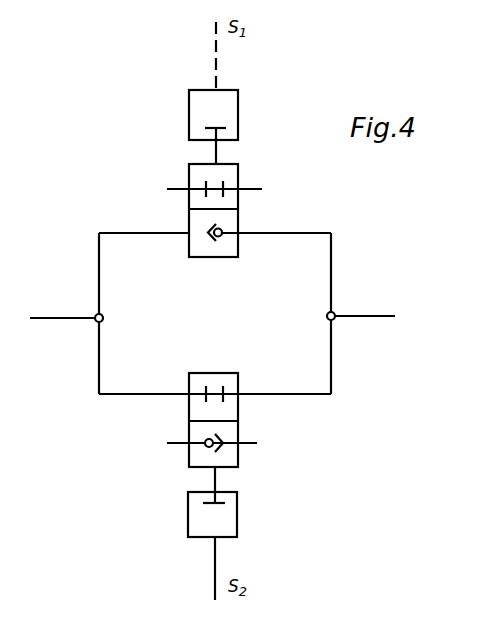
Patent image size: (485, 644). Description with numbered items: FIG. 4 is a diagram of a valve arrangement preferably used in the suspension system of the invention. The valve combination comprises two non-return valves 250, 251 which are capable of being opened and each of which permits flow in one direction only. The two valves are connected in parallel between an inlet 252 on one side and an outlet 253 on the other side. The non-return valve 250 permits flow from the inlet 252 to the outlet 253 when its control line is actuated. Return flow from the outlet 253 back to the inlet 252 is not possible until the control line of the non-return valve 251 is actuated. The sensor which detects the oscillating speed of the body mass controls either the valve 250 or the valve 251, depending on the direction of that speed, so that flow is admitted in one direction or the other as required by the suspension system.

The non-return valve 250 is at (238, 201).
The non-return valve 251 is at (238, 413).
The inlet 252 is at (66, 307).
The outlet 253 is at (361, 306).